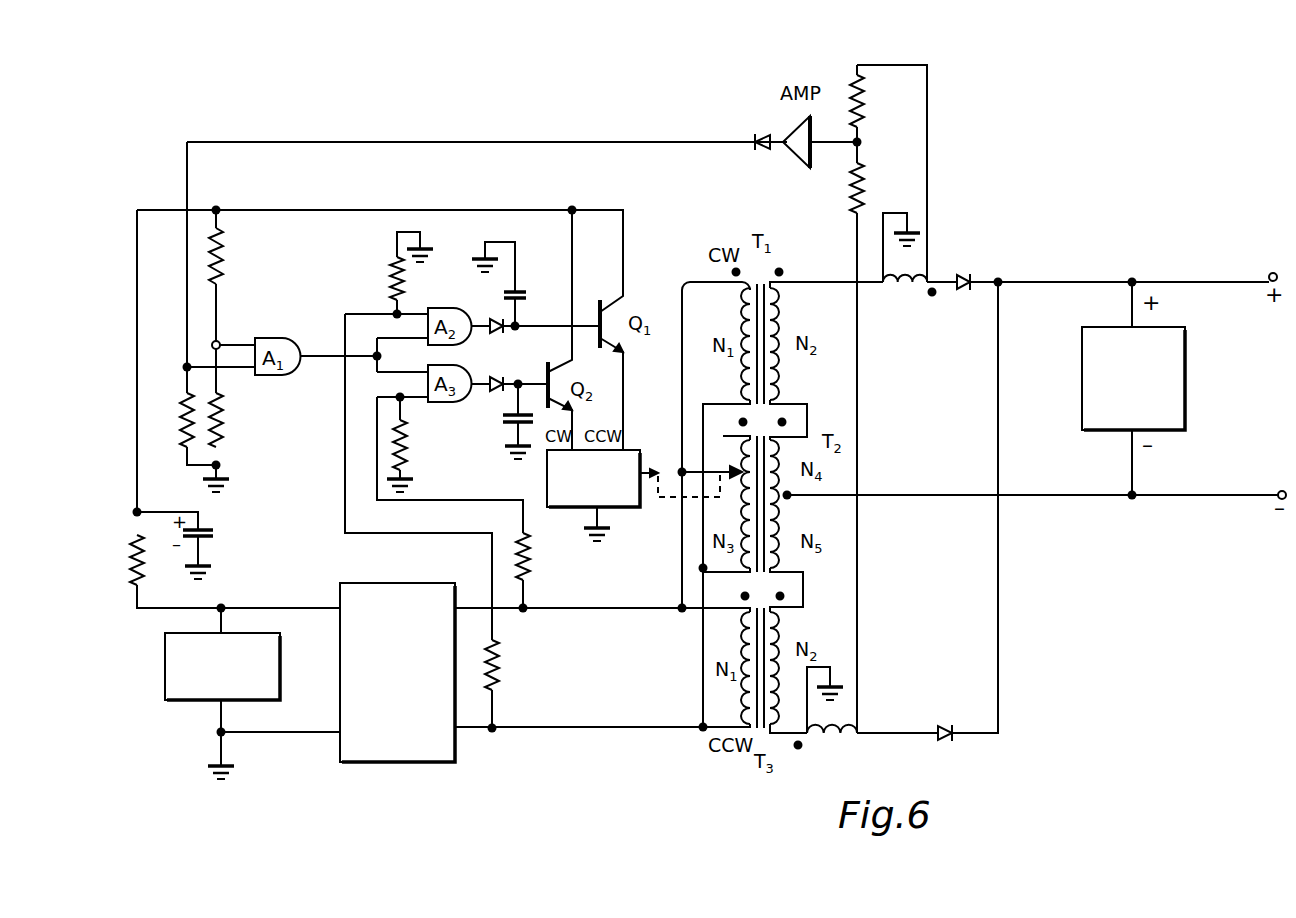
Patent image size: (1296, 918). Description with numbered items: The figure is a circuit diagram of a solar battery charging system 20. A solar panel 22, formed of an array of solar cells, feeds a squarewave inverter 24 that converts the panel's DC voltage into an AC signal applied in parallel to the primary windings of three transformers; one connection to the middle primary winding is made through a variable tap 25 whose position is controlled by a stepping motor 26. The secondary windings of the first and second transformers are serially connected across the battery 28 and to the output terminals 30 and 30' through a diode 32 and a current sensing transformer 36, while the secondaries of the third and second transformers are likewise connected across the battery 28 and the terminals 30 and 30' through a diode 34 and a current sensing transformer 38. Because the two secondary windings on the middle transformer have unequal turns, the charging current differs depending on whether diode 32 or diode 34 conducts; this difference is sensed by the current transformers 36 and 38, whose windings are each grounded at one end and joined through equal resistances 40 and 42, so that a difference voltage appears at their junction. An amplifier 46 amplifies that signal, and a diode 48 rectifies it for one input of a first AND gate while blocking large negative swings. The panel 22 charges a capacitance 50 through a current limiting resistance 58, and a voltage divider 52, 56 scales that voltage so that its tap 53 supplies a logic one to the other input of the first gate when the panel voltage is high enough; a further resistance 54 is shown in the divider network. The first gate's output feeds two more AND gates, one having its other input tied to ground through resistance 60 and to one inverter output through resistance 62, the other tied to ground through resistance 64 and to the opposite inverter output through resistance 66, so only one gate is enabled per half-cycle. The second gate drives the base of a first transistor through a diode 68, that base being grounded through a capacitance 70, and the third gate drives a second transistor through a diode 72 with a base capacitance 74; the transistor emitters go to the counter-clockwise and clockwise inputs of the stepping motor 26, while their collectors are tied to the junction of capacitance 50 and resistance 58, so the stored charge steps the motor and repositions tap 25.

The system 20 is at (562, 139).
The solar panel 22 is at (165, 672).
The squarewave inverter 24 is at (450, 748).
The variable tap 25 is at (688, 470).
The stepping motor 26 is at (640, 500).
The battery 28 is at (1186, 354).
The output terminal 30 is at (1267, 258).
The output terminal 30' is at (1268, 477).
The diode 32 is at (967, 276).
The diode 34 is at (953, 724).
The current sensing transformer 36 is at (921, 287).
The current sensing transformer 38 is at (858, 726).
The resistance 40 is at (864, 112).
The resistance 42 is at (864, 180).
The amplifier 46 is at (792, 158).
The diode 48 is at (755, 136).
The capacitance 50 is at (213, 534).
The voltage divider resistance 52 is at (222, 256).
The tap 53 is at (219, 341).
The resistor 54 is at (181, 420).
The voltage divider resistance 56 is at (223, 420).
The current limiting resistance 58 is at (131, 568).
The resistance 60 is at (390, 282).
The resistance 62 is at (499, 666).
The resistance 64 is at (407, 444).
The resistance 66 is at (530, 558).
The diode 68 is at (499, 318).
The capacitance 70 is at (523, 290).
The diode 72 is at (501, 376).
The capacitance 74 is at (503, 420).